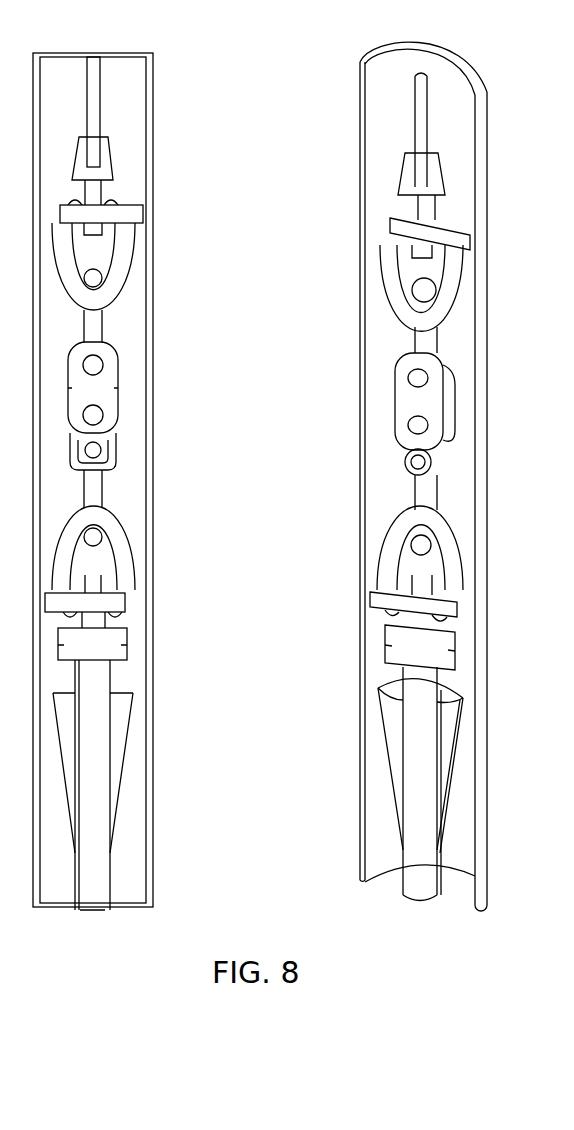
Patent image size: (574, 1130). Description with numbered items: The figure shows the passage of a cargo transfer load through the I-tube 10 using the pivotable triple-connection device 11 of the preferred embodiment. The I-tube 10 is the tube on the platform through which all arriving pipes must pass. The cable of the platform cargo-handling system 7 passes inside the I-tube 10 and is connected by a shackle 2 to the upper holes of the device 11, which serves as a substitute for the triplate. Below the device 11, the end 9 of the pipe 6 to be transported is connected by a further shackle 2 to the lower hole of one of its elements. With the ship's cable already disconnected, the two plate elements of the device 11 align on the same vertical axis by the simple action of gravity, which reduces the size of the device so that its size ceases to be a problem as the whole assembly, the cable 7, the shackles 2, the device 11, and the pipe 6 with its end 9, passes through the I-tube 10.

The I-tube 10 is at (360, 62).
The cable of the platform cargo-handling system 7 is at (405, 160).
The shackle 2 is at (385, 240).
The pivotable triple-connection device 11 is at (392, 390).
The end of the pipe 9 is at (383, 625).
The pipe 6 is at (383, 737).